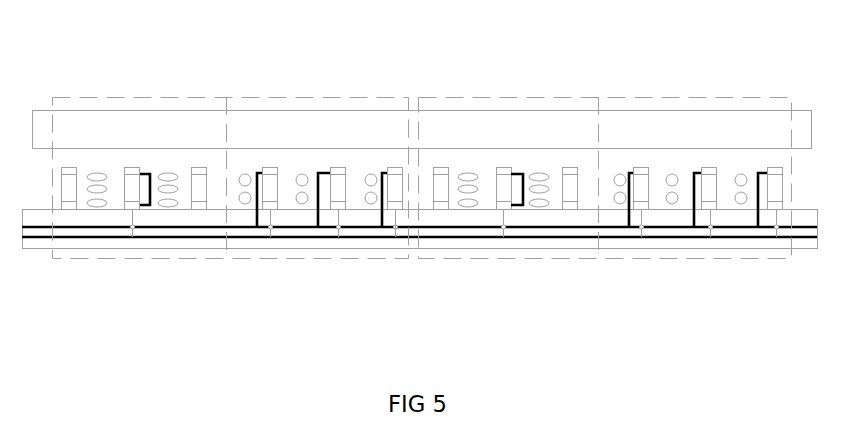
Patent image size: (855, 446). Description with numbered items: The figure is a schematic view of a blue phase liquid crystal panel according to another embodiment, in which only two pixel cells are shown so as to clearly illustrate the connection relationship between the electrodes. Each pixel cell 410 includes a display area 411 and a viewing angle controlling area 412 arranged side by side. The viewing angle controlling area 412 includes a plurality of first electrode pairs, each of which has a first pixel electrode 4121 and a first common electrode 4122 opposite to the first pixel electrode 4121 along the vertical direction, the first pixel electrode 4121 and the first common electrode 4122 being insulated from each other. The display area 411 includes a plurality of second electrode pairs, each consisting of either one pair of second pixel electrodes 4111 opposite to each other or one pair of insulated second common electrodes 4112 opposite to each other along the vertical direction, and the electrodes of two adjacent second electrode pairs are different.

The pixel cell 410 is at (315, 54).
The display area 411 is at (162, 98).
The viewing angle controlling area 412 is at (370, 98).
The second pixel electrode 4111 is at (72, 203).
The second common electrode 4112 is at (130, 203).
The first pixel electrode 4121 is at (388, 170).
The first common electrode 4122 is at (395, 210).